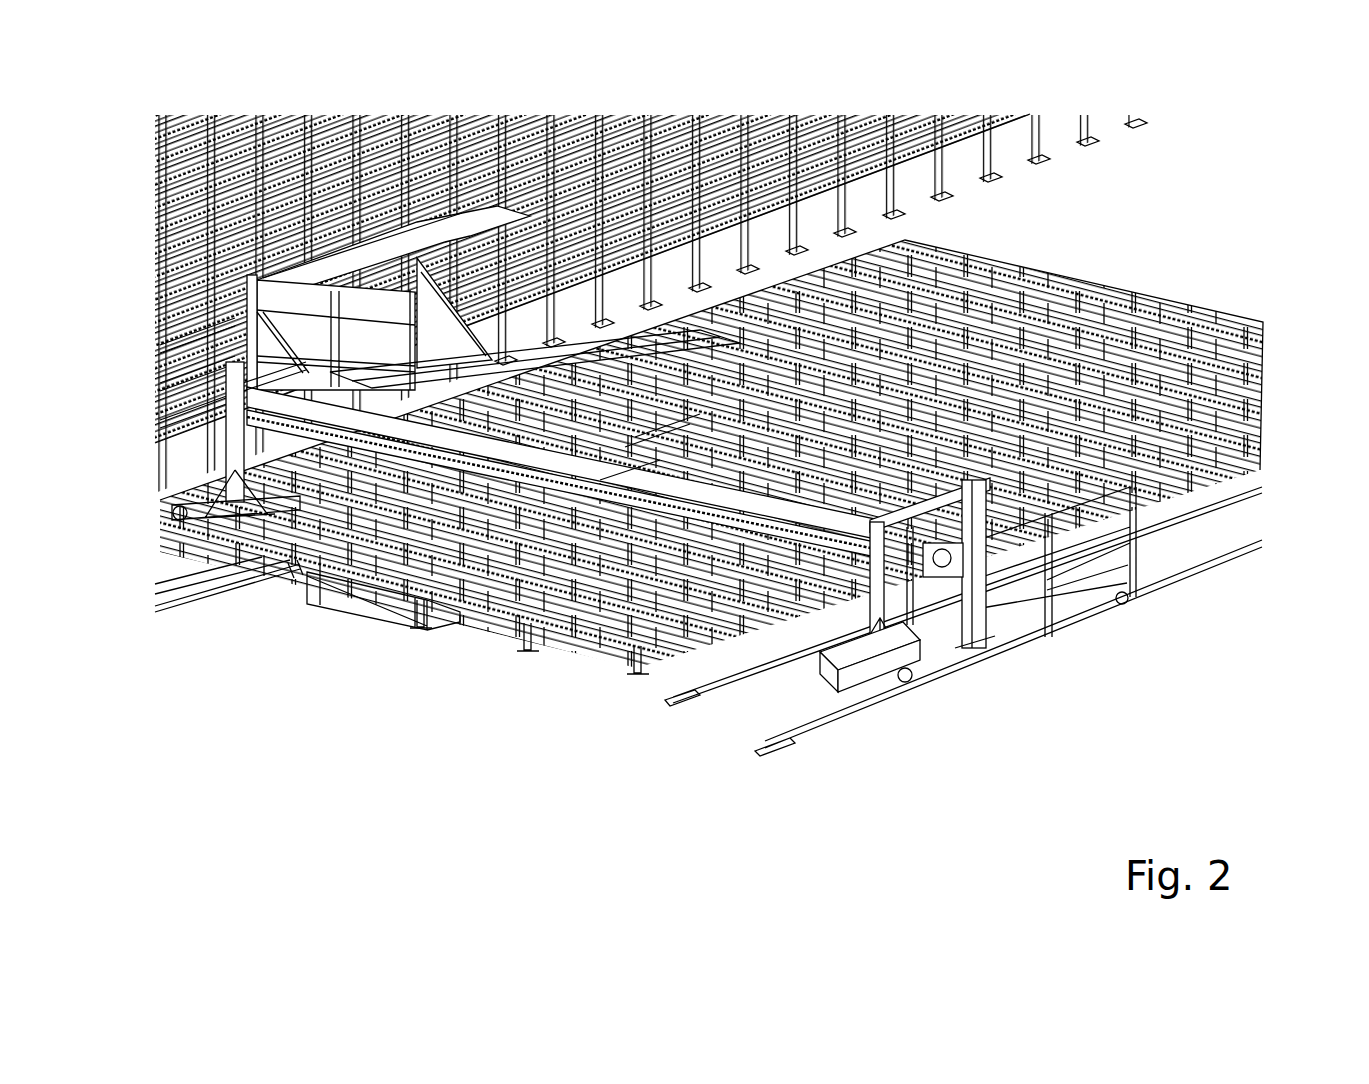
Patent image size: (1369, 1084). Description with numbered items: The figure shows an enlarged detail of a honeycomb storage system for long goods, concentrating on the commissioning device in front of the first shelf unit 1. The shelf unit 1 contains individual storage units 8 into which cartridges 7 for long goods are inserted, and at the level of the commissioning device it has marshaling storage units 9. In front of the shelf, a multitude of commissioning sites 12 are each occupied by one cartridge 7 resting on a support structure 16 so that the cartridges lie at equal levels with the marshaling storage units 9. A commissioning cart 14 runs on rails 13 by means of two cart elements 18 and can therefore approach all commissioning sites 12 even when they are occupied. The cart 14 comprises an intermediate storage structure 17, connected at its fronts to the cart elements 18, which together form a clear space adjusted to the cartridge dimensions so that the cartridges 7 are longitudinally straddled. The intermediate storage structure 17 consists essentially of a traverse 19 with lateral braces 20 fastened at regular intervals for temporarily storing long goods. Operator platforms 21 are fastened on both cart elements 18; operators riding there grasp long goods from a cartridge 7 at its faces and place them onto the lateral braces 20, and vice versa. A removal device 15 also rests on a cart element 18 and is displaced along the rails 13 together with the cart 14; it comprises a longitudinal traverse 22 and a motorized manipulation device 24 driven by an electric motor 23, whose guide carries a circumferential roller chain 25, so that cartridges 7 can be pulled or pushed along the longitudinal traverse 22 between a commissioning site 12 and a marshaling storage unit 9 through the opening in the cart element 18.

The first shelf unit 1 is at (163, 176).
The cartridge 7 is at (482, 588).
The storage units 8 is at (183, 335).
The marshaling storage units 9 is at (183, 450).
The commissioning sites 12 is at (690, 653).
The rails 13 is at (170, 553).
The commissioning cart 14 is at (1010, 560).
The removal device 15 is at (974, 634).
The support structure 16 is at (397, 593).
The intermediate storage structure 17 is at (515, 395).
The cart element 18 is at (873, 677).
The traverse 19 is at (648, 425).
The lateral braces 20 is at (645, 432).
The operator platforms 21 is at (268, 347).
The longitudinal traverse 22 is at (627, 465).
The electric motor 23 is at (948, 550).
The manipulation device 24 is at (893, 620).
The circumferential roller chain 25 is at (240, 480).